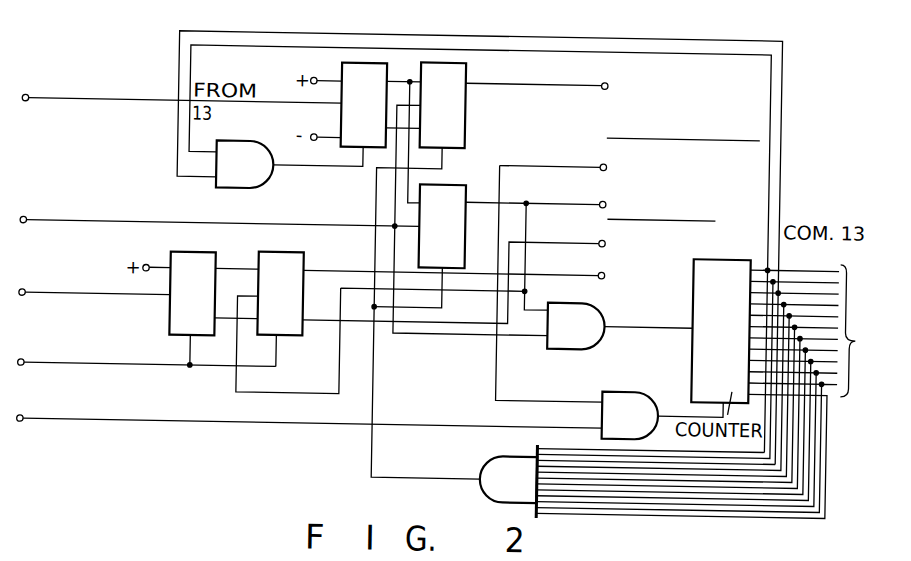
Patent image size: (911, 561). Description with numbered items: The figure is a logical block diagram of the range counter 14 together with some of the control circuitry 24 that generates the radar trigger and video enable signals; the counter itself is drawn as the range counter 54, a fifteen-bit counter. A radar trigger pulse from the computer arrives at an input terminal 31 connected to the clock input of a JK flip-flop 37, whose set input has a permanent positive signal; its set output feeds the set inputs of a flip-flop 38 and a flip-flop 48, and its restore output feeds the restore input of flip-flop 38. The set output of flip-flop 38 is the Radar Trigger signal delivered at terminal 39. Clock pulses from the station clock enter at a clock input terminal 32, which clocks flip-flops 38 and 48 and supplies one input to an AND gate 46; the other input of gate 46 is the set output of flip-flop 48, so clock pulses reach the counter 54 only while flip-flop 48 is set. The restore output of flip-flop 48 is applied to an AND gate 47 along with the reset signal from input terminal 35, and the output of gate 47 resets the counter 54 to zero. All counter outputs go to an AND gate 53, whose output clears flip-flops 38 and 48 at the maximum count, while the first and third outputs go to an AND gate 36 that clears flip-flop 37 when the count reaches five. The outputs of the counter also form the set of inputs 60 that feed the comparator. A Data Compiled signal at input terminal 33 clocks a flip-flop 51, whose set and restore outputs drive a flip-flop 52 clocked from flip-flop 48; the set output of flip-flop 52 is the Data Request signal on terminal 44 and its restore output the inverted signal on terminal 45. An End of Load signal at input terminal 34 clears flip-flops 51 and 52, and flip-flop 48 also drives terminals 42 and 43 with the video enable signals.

The input terminal 31 is at (23, 102).
The clock input terminal 32 is at (23, 224).
The input terminal 33 is at (23, 296).
The input terminal 34 is at (23, 366).
The input terminal 35 is at (23, 422).
The AND gate 36 is at (250, 154).
The JK flip-flop 37 is at (338, 117).
The flip-flop 38 is at (462, 124).
The terminal 39 is at (600, 80).
The terminal 42 is at (600, 162).
The terminal 43 is at (600, 199).
The terminal 44 is at (600, 270).
The terminal 45 is at (600, 238).
The AND gate 46 is at (583, 301).
The AND gate 47 is at (640, 389).
The flip-flop 48 is at (445, 186).
The flip-flop 51 is at (202, 256).
The flip-flop 52 is at (295, 255).
The AND gate 53 is at (526, 456).
The range counter 54 is at (693, 356).
The set of inputs 60 is at (700, 390).
The range counter 14 is at (293, 464).
The control circuitry 24 is at (167, 544).